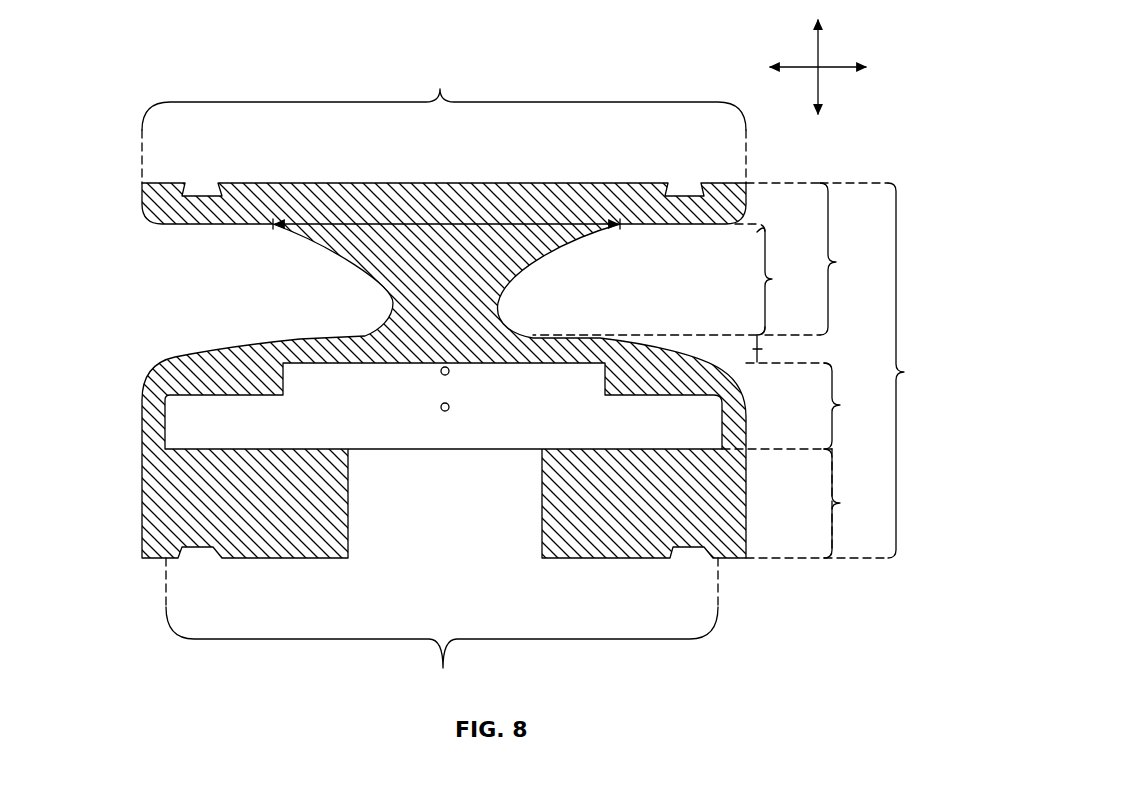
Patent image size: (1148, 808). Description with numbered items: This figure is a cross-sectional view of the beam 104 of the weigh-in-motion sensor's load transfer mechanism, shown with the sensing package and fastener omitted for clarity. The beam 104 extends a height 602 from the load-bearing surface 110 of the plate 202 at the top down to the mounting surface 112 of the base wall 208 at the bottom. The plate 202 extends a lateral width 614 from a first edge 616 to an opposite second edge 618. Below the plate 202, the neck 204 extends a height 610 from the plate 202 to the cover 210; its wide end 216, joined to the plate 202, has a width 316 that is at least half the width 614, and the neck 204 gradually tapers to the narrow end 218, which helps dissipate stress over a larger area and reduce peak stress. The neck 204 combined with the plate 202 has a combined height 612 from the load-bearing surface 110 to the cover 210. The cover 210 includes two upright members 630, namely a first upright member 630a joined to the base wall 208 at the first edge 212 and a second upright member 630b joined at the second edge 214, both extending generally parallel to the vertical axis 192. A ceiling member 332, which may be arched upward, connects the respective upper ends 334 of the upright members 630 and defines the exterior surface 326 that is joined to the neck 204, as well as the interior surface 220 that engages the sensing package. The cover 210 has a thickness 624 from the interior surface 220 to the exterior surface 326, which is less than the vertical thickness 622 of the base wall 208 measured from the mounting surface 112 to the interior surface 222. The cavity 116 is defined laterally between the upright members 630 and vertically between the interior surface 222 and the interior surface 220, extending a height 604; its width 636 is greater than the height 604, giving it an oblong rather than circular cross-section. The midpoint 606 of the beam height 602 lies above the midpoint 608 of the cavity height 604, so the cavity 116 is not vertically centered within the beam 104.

The beam 104 is at (693, 131).
The load-bearing surface 110 is at (568, 183).
The mounting surface 112 is at (305, 560).
The cavity 116 is at (596, 405).
The vertical axis 192 is at (820, 43).
The plate 202 is at (263, 190).
The neck 204 is at (478, 265).
The base wall 208 is at (235, 543).
The cover 210 is at (530, 339).
The first edge 212 is at (142, 497).
The second edge 214 is at (752, 483).
The wide end 216 is at (282, 235).
The narrow end 218 is at (375, 321).
The interior surface of the cover 220 is at (557, 365).
The interior surface of the base wall 222 is at (562, 449).
The width of the wide end 316 is at (347, 226).
The exterior surface of the cover 326 is at (555, 338).
The ceiling member 332 is at (227, 363).
The upper ends 334 is at (141, 396).
The height of the beam 602 is at (853, 370).
The height of the cavity 604 is at (806, 406).
The midpoint of the beam height 606 is at (441, 372).
The midpoint of the cavity height 608 is at (441, 408).
The height of the neck 610 is at (679, 279).
The combined height 612 is at (819, 259).
The lateral width of the plate 614 is at (444, 116).
The first edge of the plate 616 is at (142, 190).
The second edge of the plate 618 is at (748, 190).
The vertical thickness of the base wall 622 is at (857, 503).
The thickness of the cover 624 is at (780, 349).
The upright members 630 is at (153, 418).
The first upright member 630a is at (153, 432).
The second upright member 630b is at (737, 417).
The width of the cavity 636 is at (442, 631).